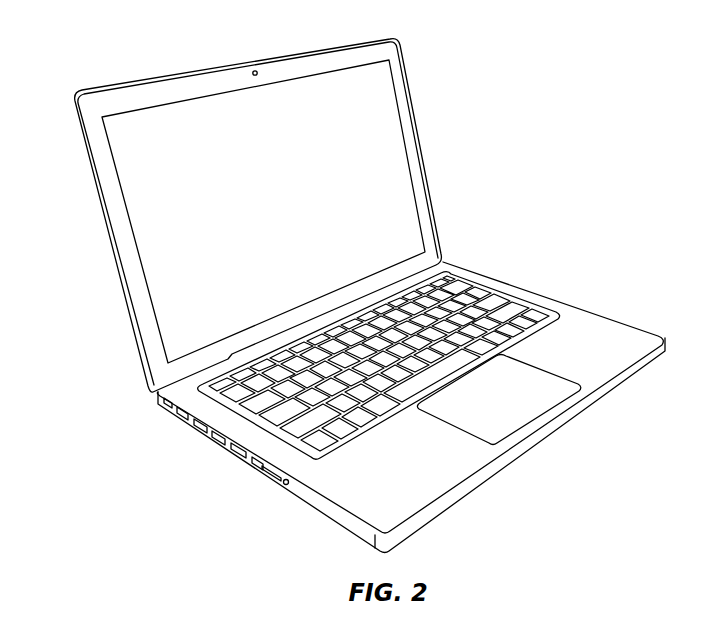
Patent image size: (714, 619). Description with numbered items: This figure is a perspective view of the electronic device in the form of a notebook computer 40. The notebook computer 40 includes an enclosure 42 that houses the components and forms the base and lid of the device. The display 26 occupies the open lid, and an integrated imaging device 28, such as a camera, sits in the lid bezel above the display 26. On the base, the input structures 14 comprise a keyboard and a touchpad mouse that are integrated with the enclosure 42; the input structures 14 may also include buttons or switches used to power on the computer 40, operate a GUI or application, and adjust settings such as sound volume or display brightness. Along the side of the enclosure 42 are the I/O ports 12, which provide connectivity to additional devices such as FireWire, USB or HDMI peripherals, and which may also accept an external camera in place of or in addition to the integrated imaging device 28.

The notebook computer 40 is at (71, 70).
The display 26 is at (393, 118).
The integrated imaging device 28 is at (250, 68).
The enclosure 42 is at (612, 321).
The input structures 14 is at (527, 300).
The I/O ports 12 is at (220, 445).